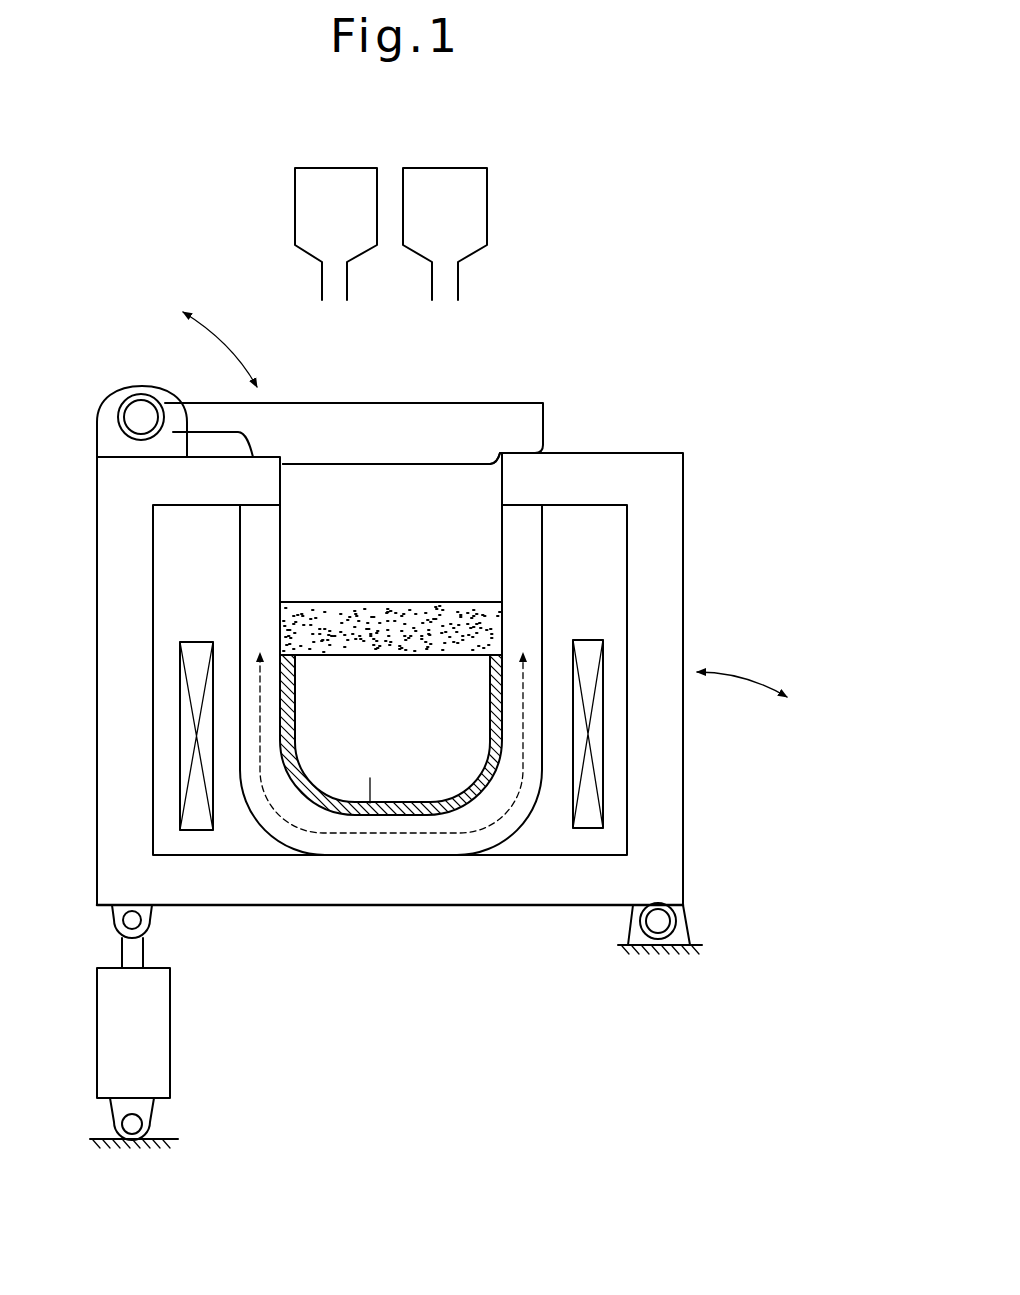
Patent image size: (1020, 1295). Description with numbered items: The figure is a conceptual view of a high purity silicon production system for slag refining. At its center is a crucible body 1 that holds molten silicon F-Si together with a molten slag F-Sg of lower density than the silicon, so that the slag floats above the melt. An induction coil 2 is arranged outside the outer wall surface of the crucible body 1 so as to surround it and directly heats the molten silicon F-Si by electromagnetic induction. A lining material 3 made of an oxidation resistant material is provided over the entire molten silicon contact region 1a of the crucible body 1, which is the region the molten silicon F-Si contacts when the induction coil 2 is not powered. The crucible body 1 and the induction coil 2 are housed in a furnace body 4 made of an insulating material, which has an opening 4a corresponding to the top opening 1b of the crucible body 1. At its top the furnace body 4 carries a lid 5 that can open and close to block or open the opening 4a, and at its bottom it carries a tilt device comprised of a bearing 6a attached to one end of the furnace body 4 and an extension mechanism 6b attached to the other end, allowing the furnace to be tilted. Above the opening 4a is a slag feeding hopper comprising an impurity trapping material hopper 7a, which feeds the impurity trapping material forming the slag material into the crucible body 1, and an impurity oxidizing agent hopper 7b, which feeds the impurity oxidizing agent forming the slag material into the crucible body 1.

The crucible body 1 is at (548, 554).
The molten silicon contact region 1a is at (522, 812).
The top opening 1b is at (447, 464).
The induction coil 2 is at (185, 730).
The lining material 3 is at (480, 755).
The furnace body 4 is at (684, 623).
The opening 4a is at (480, 462).
The lid 5 is at (302, 410).
The bearing 6a is at (684, 918).
The extension mechanism 6b is at (152, 1040).
The impurity trapping material hopper 7a is at (440, 173).
The impurity oxidizing agent hopper 7b is at (337, 177).
The molten slag F-Sg is at (494, 620).
The molten silicon F-Si is at (371, 803).